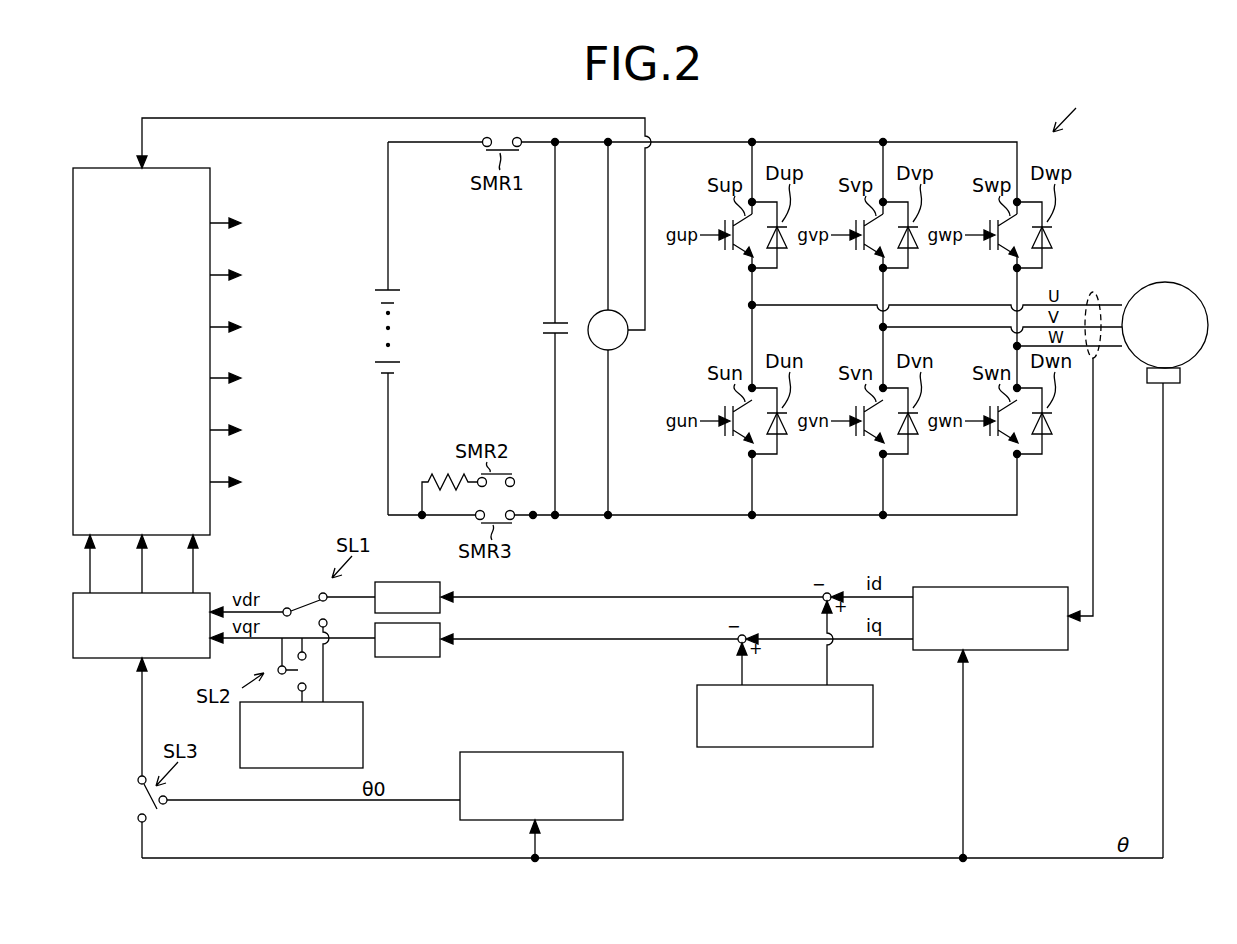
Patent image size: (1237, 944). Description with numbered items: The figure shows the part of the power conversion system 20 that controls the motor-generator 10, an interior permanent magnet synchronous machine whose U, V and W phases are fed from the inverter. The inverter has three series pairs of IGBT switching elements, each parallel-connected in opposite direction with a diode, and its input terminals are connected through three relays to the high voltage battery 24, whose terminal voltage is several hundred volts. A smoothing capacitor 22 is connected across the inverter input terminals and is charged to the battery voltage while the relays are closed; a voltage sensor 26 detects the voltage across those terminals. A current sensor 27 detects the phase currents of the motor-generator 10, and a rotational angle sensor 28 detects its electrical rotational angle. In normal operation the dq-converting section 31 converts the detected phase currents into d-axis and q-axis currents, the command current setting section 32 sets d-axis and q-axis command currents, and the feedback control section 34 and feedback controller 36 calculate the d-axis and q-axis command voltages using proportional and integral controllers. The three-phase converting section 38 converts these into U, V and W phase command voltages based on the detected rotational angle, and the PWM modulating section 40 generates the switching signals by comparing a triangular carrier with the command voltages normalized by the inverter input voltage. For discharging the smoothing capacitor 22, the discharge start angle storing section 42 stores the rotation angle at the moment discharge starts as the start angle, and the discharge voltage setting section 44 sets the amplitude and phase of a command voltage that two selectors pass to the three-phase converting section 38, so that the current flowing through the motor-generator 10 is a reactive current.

The motor-generator 10 is at (1165, 282).
The motor control system 20 is at (1178, 121).
The smoothing capacitor 22 is at (558, 322).
The high voltage battery 24 is at (388, 290).
The voltage sensor 26 is at (620, 346).
The current sensor 27 is at (1093, 291).
The rotational angle sensor 28 is at (1172, 385).
The dq-converting section 31 is at (1036, 586).
The command current setting section 32 is at (875, 716).
The feedback control section 34 is at (410, 581).
The feedback controller 36 is at (410, 658).
The three-phase converting section 38 is at (118, 658).
The PWM modulating section 40 is at (192, 172).
The discharge start angle storing section 42 is at (572, 752).
The discharge voltage setting section 44 is at (365, 737).